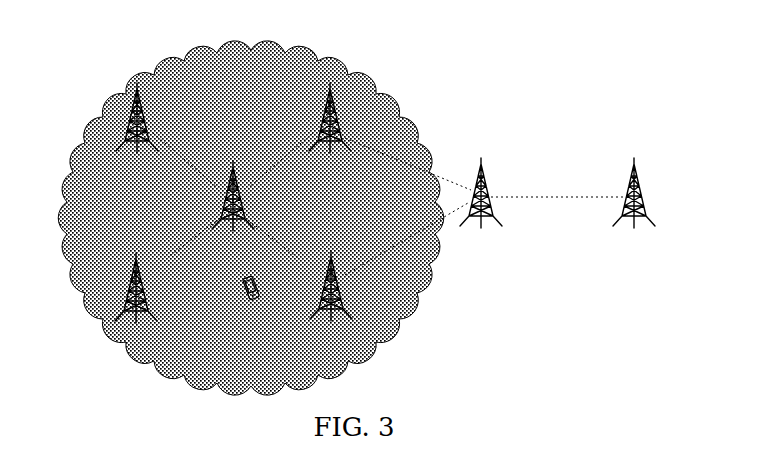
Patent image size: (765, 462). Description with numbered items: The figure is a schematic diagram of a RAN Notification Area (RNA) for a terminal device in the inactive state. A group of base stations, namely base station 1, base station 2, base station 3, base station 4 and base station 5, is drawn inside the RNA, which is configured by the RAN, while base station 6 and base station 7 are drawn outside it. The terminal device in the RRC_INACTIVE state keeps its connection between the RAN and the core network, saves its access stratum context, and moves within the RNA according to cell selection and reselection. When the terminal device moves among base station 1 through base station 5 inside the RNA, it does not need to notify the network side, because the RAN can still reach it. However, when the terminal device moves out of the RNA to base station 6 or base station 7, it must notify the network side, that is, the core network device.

The base station 1 is at (137, 135).
The base station 2 is at (145, 297).
The base station 3 is at (233, 209).
The base station 4 is at (330, 136).
The base station 5 is at (331, 303).
The base station 6 is at (481, 210).
The base station 7 is at (634, 210).